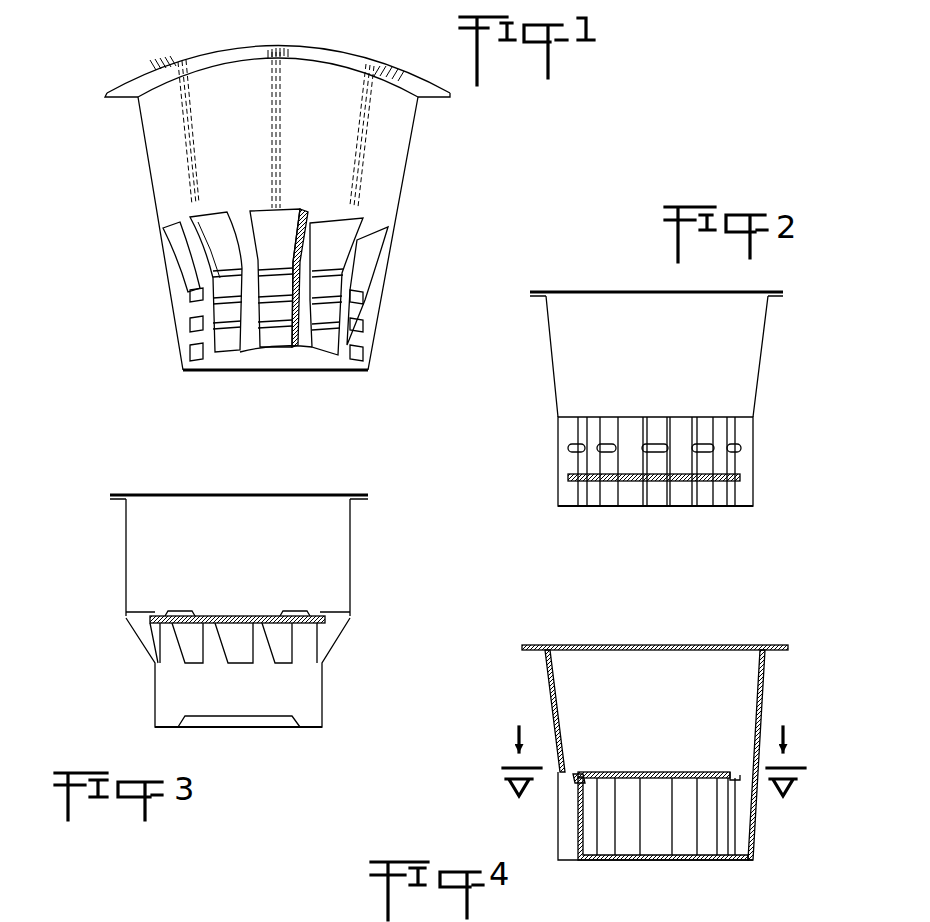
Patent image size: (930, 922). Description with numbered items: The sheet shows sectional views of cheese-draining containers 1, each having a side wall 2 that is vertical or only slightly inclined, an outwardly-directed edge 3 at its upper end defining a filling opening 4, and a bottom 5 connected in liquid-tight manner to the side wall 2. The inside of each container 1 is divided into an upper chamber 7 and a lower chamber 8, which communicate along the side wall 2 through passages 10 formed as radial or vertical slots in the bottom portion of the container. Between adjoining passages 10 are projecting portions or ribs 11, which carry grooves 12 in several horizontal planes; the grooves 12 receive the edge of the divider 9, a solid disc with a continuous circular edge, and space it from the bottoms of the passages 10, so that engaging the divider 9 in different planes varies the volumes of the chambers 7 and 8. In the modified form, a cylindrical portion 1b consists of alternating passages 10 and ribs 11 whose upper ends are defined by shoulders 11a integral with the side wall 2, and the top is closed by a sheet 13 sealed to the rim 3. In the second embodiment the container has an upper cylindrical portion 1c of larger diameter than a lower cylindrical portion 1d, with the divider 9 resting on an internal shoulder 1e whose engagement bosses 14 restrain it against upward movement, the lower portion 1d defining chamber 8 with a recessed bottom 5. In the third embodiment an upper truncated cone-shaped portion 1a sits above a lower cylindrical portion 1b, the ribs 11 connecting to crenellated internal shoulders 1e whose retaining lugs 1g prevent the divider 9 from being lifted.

In FIG. 1, the container 1 is at (251, 215).
In FIG. 2, the container 1 is at (652, 411).
In FIG. 3, the container 1 is at (232, 617).
In FIG. 2, the upper truncated cone-shaped portion 1a is at (762, 362).
In FIG. 4, the upper truncated cone-shaped portion 1a is at (762, 702).
In FIG. 2, the lower cylindrical portion 1b is at (557, 458).
In FIG. 4, the lower cylindrical portion 1b is at (755, 841).
In FIG. 3, the upper cylindrical portion 1c is at (355, 556).
In FIG. 3, the lower cylindrical portion 1d is at (327, 698).
In FIG. 3, the internal shoulder 1e is at (150, 628).
In FIG. 4, the internal shoulder 1e is at (572, 770).
In FIG. 4, the retaining lug 1g is at (583, 771).
In FIG. 1, the side wall 2 is at (138, 150).
In FIG. 2, the side wall 2 is at (548, 362).
In FIG. 1, the outwardly-directed edge 3 is at (108, 90).
In FIG. 2, the outwardly-directed edge 3 is at (545, 302).
In FIG. 3, the outwardly-directed edge 3 is at (355, 502).
In FIG. 1, the filling opening 4 is at (222, 80).
In FIG. 1, the bottom 5 is at (230, 372).
In FIG. 2, the bottom 5 is at (670, 508).
In FIG. 3, the bottom 5 is at (280, 728).
In FIG. 4, the bottom 5 is at (655, 858).
In FIG. 1, the upper chamber 7 is at (308, 114).
In FIG. 2, the upper chamber 7 is at (663, 347).
In FIG. 3, the upper chamber 7 is at (240, 565).
In FIG. 4, the upper chamber 7 is at (661, 707).
In FIG. 1, the lower chamber 8 is at (282, 369).
In FIG. 2, the lower chamber 8 is at (636, 503).
In FIG. 3, the lower chamber 8 is at (236, 705).
In FIG. 4, the lower chamber 8 is at (661, 831).
In FIG. 2, the divider 9 is at (705, 483).
In FIG. 3, the divider 9 is at (268, 616).
In FIG. 4, the divider 9 is at (687, 773).
In FIG. 1, the passages 10 is at (242, 218).
In FIG. 2, the passages 10 is at (625, 428).
In FIG. 3, the passages 10 is at (322, 650).
In FIG. 4, the passages 10 is at (720, 848).
In FIG. 1, the projecting portions 11 is at (328, 232).
In FIG. 2, the projecting portions 11 is at (650, 506).
In FIG. 4, the projecting portions 11 is at (603, 845).
In FIG. 2, the shoulders 11a is at (727, 418).
In FIG. 1, the grooves 12 is at (197, 350).
In FIG. 2, the grooves 12 is at (705, 448).
In FIG. 2, the sheet 13 is at (600, 292).
In FIG. 3, the sheet 13 is at (198, 495).
In FIG. 3, the engagement bosses 14 is at (240, 616).